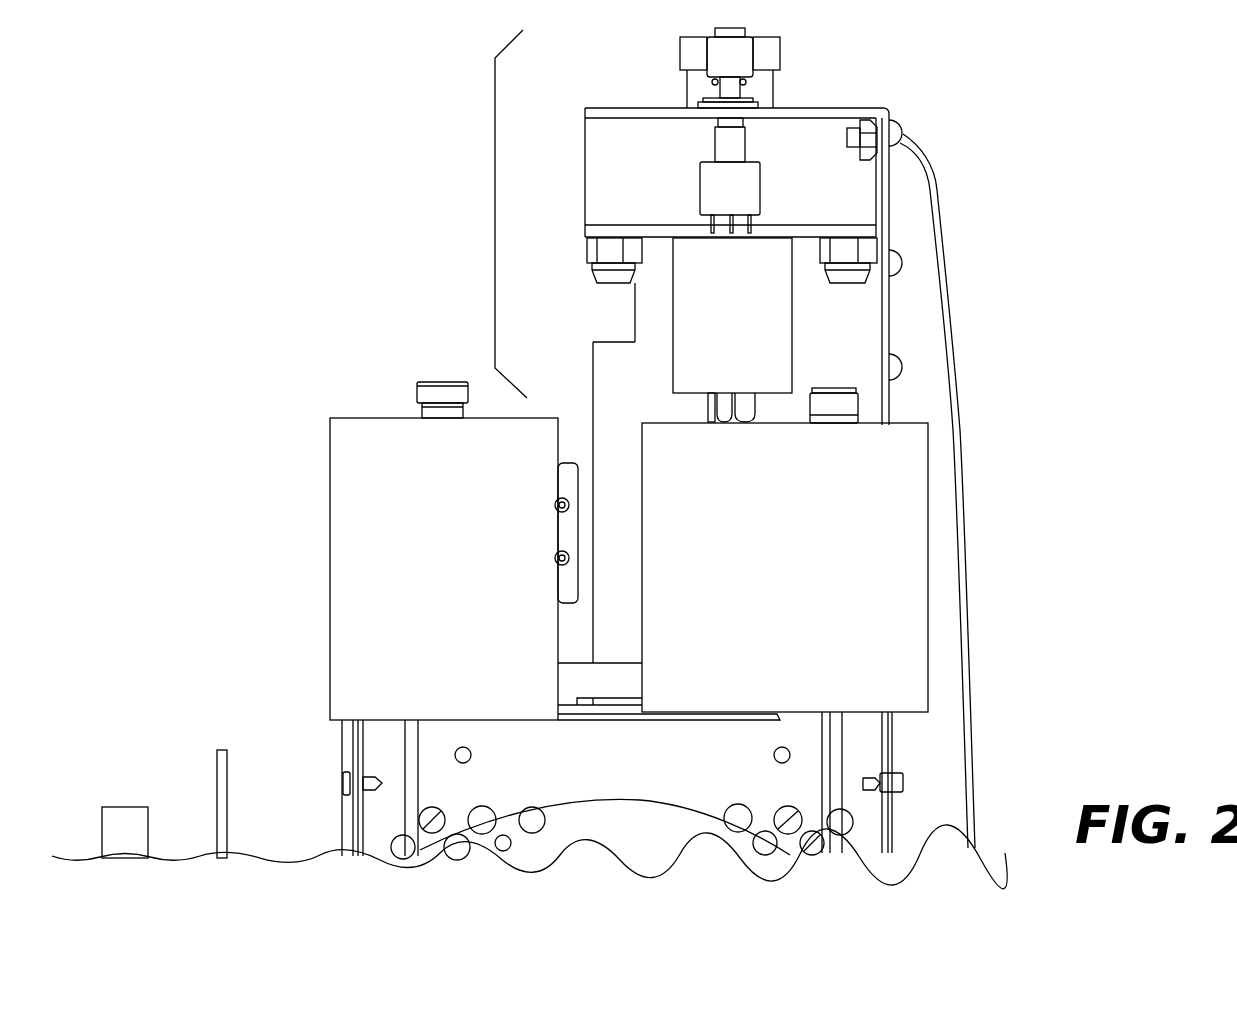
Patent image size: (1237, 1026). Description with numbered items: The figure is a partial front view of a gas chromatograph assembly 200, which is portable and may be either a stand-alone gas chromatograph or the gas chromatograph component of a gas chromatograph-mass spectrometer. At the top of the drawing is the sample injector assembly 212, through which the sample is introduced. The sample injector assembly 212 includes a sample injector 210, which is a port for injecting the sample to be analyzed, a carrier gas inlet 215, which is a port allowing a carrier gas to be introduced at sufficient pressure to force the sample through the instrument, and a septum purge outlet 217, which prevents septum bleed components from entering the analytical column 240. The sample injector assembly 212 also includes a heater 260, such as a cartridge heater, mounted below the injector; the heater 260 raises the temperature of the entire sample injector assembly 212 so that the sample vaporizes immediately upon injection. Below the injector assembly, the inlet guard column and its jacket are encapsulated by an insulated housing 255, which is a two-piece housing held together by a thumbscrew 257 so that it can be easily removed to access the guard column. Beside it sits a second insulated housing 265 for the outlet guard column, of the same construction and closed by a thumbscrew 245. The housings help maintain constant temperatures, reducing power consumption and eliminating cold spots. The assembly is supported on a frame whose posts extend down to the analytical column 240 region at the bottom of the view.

The gas chromatograph assembly 200 is at (332, 148).
The sample injector 210 is at (683, 47).
The sample injector assembly 212 is at (495, 230).
The carrier gas inlet 215 is at (747, 85).
The septum purge outlet 217 is at (712, 82).
The analytical column 240 is at (827, 770).
The thumbscrew 245 is at (427, 392).
The insulated housing 255 is at (893, 527).
The thumbscrew 257 is at (860, 402).
The heater 260 is at (690, 305).
The insulated housing 265 is at (357, 530).